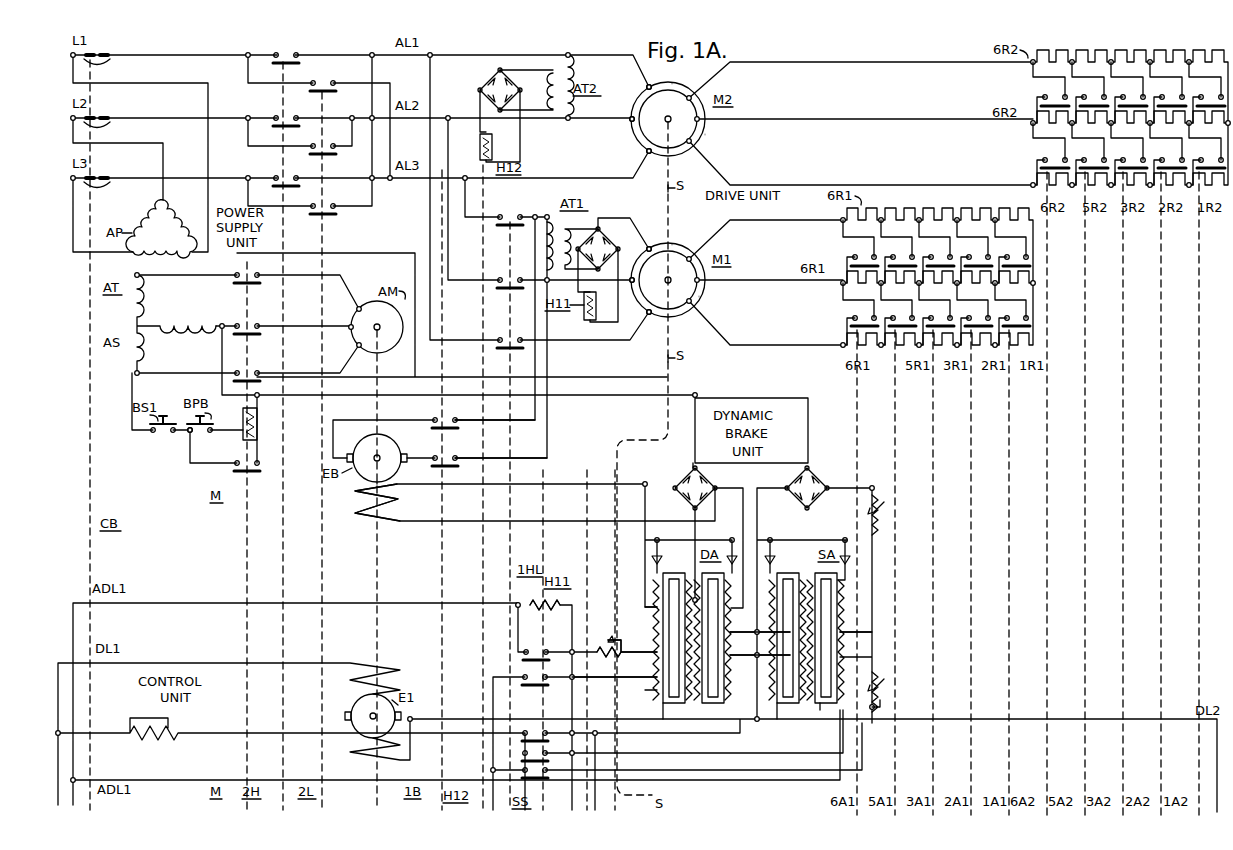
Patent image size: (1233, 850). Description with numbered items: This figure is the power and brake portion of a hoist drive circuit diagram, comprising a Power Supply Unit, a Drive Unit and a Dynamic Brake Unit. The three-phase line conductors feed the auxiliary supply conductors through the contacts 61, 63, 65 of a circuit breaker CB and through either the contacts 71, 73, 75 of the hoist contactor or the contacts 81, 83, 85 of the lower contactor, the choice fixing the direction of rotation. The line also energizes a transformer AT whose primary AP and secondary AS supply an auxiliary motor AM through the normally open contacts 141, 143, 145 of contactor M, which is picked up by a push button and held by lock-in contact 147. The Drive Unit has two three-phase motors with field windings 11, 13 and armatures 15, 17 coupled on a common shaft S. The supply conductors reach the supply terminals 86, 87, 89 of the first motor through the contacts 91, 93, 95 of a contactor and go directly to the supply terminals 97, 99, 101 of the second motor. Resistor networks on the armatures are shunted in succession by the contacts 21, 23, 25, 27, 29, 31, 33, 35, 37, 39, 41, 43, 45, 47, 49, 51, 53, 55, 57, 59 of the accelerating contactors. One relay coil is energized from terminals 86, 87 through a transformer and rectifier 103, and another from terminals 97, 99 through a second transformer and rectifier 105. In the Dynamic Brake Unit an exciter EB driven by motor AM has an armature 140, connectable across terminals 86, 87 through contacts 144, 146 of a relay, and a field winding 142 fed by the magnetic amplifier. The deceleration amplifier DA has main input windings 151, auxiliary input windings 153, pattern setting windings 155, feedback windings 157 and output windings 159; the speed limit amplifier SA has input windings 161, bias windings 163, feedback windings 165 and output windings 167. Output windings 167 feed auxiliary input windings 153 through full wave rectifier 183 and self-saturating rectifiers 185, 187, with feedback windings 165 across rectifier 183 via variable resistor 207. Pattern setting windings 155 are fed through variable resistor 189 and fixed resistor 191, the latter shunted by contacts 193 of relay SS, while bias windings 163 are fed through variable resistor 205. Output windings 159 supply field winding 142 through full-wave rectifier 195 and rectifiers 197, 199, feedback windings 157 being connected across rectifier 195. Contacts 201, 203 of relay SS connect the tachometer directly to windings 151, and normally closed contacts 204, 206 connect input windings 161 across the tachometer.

The field winding 11 is at (672, 244).
The field winding 13 is at (672, 83).
The armature 15 is at (700, 296).
The armature 17 is at (707, 134).
The contact 21 is at (1012, 251).
The contact 23 is at (1011, 314).
The contact 25 is at (974, 251).
The contact 27 is at (973, 314).
The contact 29 is at (936, 251).
The contact 31 is at (936, 314).
The contact 33 is at (898, 251).
The contact 35 is at (897, 314).
The contact 37 is at (860, 251).
The contact 39 is at (857, 314).
The contact 41 is at (1207, 92).
The contact 43 is at (1205, 154).
The contact 45 is at (1168, 92).
The contact 47 is at (1166, 154).
The contact 49 is at (1129, 92).
The contact 51 is at (1128, 154).
The contact 53 is at (1090, 92).
The contact 55 is at (1088, 154).
The contact 57 is at (1051, 92).
The contact 59 is at (1048, 154).
The circuit breaker contact 61 is at (106, 60).
The circuit breaker contact 63 is at (106, 123).
The circuit breaker contact 65 is at (106, 183).
The contactor contact 71 is at (280, 59).
The contactor contact 73 is at (280, 122).
The contactor contact 75 is at (280, 182).
The contactor contact 81 is at (335, 85).
The contactor contact 83 is at (335, 148).
The contactor contact 85 is at (335, 208).
The supply terminal 86 is at (647, 246).
The supply terminal 87 is at (630, 284).
The supply terminal 89 is at (647, 314).
The contactor contact 91 is at (512, 217).
The contactor contact 93 is at (498, 284).
The contactor contact 95 is at (498, 344).
The supply terminal 97 is at (645, 87).
The supply terminal 99 is at (631, 121).
The supply terminal 101 is at (645, 152).
The rectifier 103 is at (603, 228).
The rectifier 105 is at (482, 89).
The armature 140 is at (433, 428).
The normally open contact 141 is at (235, 278).
The field winding 142 is at (357, 492).
The normally open contact 143 is at (259, 330).
The normally open contact 144 is at (459, 423).
The normally open contact 145 is at (248, 372).
The normally open contact 146 is at (459, 461).
The lock-in contact 147 is at (235, 465).
The main input windings 151 is at (648, 686).
The auxiliary input windings 153 is at (648, 636).
The pattern setting windings 155 is at (648, 660).
The feedback windings 157 is at (657, 611).
The output windings 159 is at (672, 629).
The input windings 161 is at (830, 705).
The bias windings 163 is at (768, 652).
The feedback windings 165 is at (850, 634).
The output windings 167 is at (787, 629).
The full wave rectifier 183 is at (791, 484).
The rectifier 185 is at (771, 539).
The rectifier 187 is at (843, 539).
The variable resistor 189 is at (608, 654).
The fixed resistor 191 is at (558, 612).
The normally open contacts 193 is at (551, 648).
The full-wave rectifier 195 is at (678, 484).
The rectifier 197 is at (669, 539).
The rectifier 199 is at (732, 539).
The normally open contact 201 is at (547, 680).
The normally open contact 203 is at (539, 726).
The normally closed contact 204 is at (524, 750).
The variable resistor 205 is at (879, 684).
The normally closed contact 206 is at (524, 772).
The variable resistor 207 is at (884, 522).